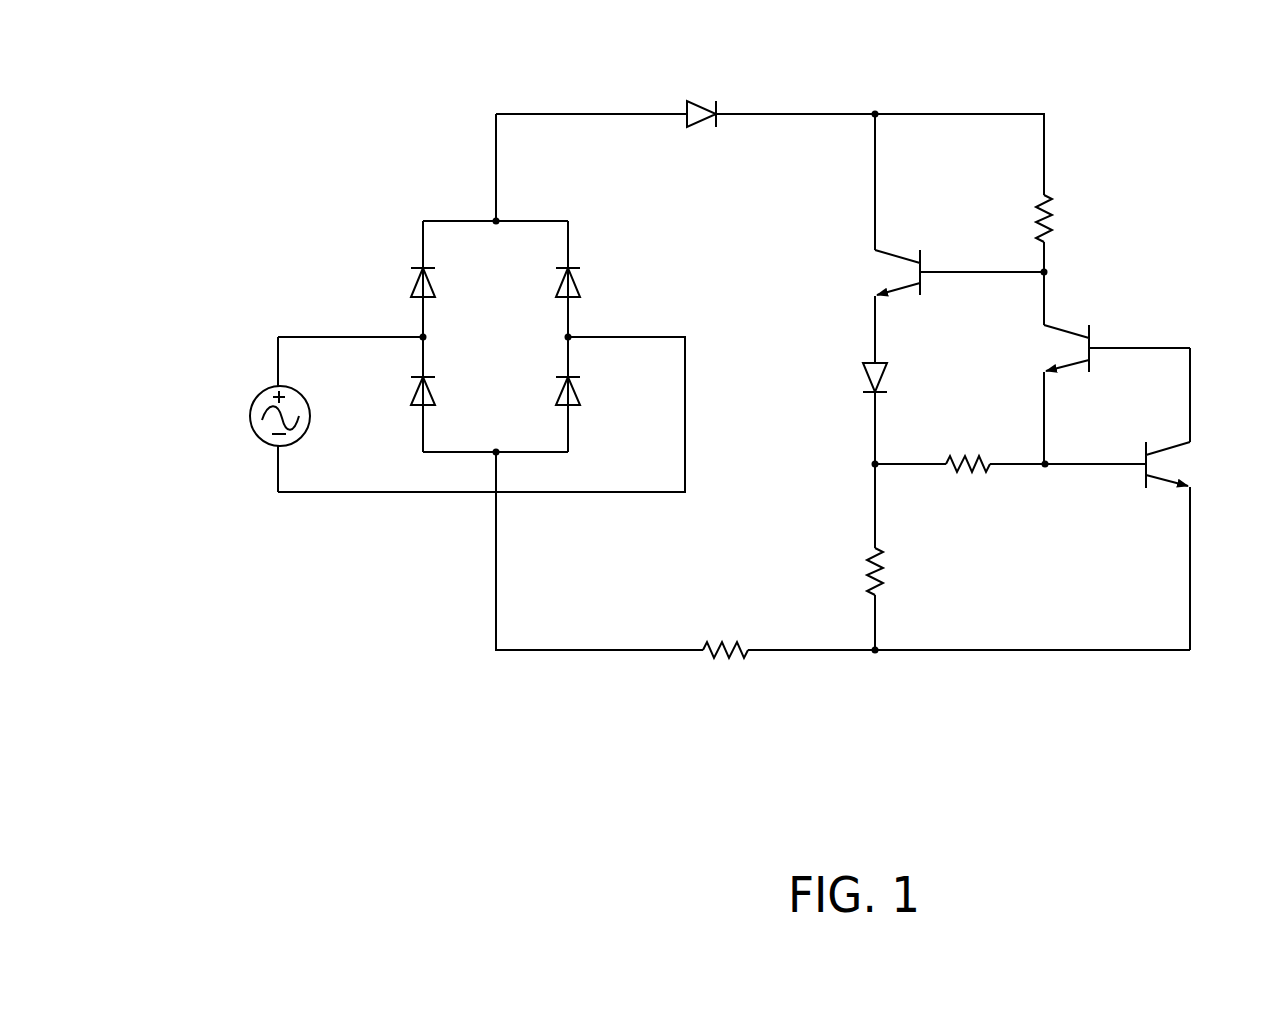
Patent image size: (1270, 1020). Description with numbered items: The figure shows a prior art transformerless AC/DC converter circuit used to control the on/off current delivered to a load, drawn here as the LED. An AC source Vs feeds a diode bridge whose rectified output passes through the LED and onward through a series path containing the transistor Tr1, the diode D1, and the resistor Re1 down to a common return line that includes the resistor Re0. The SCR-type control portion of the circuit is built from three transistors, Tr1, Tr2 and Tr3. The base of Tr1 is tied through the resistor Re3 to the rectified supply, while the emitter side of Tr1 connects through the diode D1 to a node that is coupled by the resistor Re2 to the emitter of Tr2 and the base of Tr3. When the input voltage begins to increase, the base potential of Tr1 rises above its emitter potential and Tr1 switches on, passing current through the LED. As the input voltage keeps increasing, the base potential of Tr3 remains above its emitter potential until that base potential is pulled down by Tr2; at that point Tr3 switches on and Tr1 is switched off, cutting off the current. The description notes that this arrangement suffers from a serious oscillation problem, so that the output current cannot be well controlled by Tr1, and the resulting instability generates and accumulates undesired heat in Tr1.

The AC voltage source Vs is at (256, 414).
The light emitting diode LED is at (610, 88).
The transistor Tr1 is at (940, 272).
The transistor Tr2 is at (1088, 348).
The transistor Tr3 is at (1196, 465).
The diode D1 is at (852, 376).
The resistor Re0 is at (731, 669).
The resistor Re1 is at (906, 571).
The resistor Re2 is at (971, 484).
The resistor Re3 is at (1078, 218).